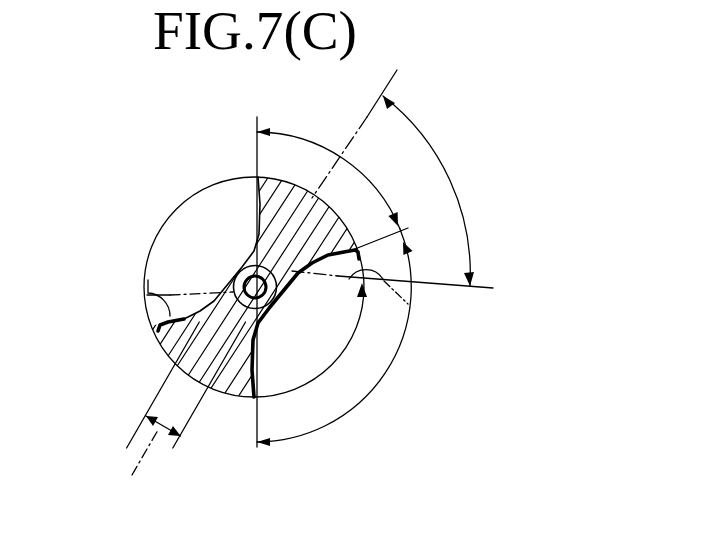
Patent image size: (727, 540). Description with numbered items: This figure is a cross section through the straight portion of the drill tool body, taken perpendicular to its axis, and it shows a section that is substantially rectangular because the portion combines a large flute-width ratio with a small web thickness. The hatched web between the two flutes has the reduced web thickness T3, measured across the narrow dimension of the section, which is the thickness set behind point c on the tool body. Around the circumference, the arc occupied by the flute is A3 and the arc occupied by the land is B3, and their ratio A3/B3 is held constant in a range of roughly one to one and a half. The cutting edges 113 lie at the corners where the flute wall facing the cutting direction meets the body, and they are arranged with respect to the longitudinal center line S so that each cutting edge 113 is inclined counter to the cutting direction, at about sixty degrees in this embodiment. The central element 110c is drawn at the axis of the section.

The shaft 110c is at (233, 278).
The cutting edge 113 is at (145, 315).
The longitudinal center line S is at (141, 460).
The web thickness T3 is at (186, 385).
The flute arc length A3 is at (335, 337).
The land arc length B3 is at (328, 173).